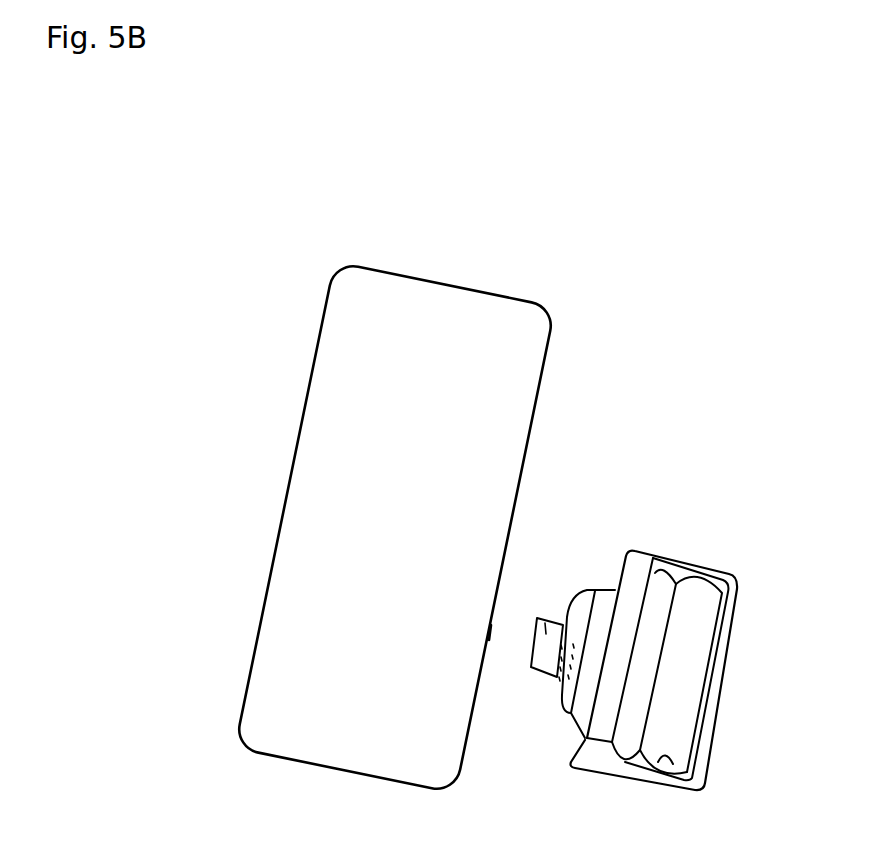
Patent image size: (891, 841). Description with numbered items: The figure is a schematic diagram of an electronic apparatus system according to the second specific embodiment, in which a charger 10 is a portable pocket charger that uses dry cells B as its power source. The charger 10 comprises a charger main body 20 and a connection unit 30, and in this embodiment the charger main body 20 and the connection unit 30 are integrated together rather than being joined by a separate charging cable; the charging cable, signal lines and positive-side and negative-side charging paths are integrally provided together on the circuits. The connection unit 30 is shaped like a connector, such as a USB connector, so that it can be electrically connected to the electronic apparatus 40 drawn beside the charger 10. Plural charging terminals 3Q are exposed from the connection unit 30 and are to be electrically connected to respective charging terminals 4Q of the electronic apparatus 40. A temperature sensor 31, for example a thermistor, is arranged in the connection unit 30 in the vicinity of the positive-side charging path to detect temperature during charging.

The electronic apparatus 40 is at (462, 320).
The charging terminals of the electronic apparatus 4Q is at (489, 635).
The charger 10 is at (683, 555).
The charger main body 20 is at (717, 697).
The dry cells B is at (697, 628).
The connection unit 30 is at (567, 617).
The charging terminals of the connection unit 3Q is at (543, 620).
The temperature sensor 31 is at (560, 682).